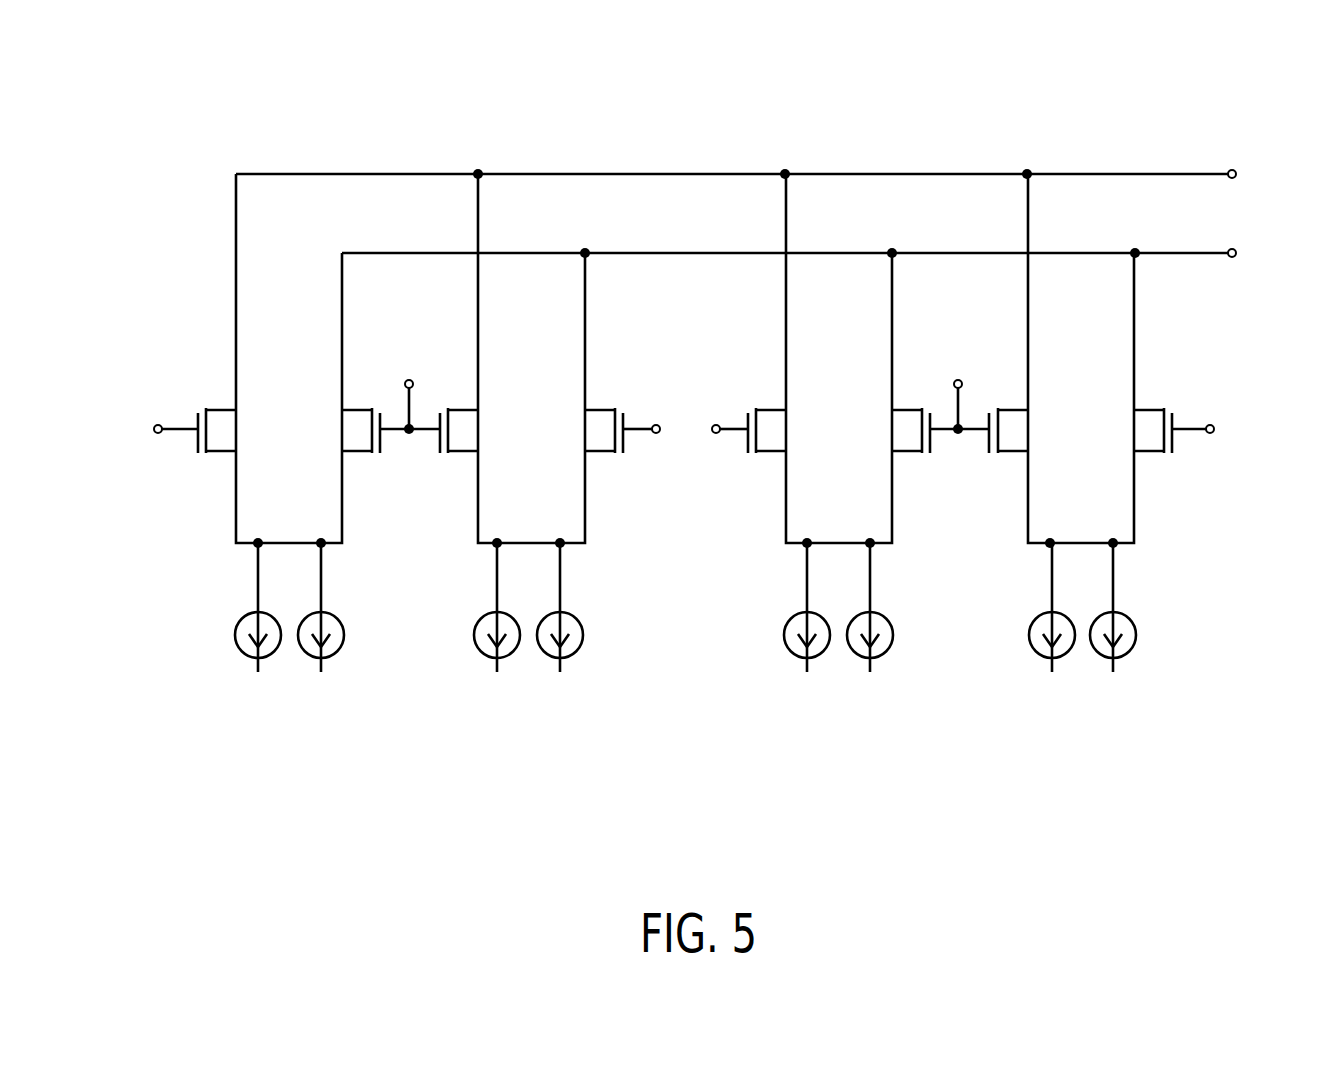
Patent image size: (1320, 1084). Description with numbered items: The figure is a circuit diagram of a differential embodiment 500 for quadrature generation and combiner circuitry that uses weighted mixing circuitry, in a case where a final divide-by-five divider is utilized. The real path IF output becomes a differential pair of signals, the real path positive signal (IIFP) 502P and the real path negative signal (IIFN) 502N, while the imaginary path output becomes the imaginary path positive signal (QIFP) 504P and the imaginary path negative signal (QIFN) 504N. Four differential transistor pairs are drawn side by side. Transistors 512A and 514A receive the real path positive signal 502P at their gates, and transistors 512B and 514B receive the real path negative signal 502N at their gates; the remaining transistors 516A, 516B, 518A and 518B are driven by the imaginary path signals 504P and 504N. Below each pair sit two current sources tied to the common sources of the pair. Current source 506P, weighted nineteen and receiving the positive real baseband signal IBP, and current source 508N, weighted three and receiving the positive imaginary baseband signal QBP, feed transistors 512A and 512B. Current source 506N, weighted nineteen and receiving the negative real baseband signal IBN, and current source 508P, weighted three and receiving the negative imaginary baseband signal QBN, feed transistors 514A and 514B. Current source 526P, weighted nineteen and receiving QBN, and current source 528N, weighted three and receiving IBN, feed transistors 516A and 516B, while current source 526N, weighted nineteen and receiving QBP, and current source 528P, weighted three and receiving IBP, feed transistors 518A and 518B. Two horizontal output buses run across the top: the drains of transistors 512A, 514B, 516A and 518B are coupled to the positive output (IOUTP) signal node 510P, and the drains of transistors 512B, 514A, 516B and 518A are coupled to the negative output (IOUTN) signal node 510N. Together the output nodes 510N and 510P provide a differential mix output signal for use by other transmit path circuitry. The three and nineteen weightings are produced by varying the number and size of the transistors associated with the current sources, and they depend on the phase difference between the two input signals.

The differential embodiment 500 is at (808, 145).
The real path positive signal (IIFP) 502P is at (182, 433).
The real path negative signal (IIFN) 502N is at (420, 435).
The imaginary path positive signal (QIFP) 504P is at (742, 427).
The imaginary path negative signal (QIFN) 504N is at (968, 437).
The current source 506P is at (238, 642).
The current source 506N is at (477, 642).
The current source 508N is at (343, 641).
The current source 508P is at (582, 641).
The positive output (IOUTP) signal node 510P is at (953, 174).
The negative output (IOUTN) signal node 510N is at (940, 253).
The transistor 512A is at (225, 453).
The transistor 512B is at (358, 453).
The transistor 514A is at (598, 452).
The transistor 514B is at (470, 455).
The transistor 516A is at (774, 455).
The transistor 516B is at (905, 452).
The transistor 518A is at (1148, 452).
The transistor 518B is at (1017, 455).
The current source 526P is at (788, 643).
The current source 526N is at (1031, 643).
The current source 528N is at (892, 641).
The current source 528P is at (1136, 641).